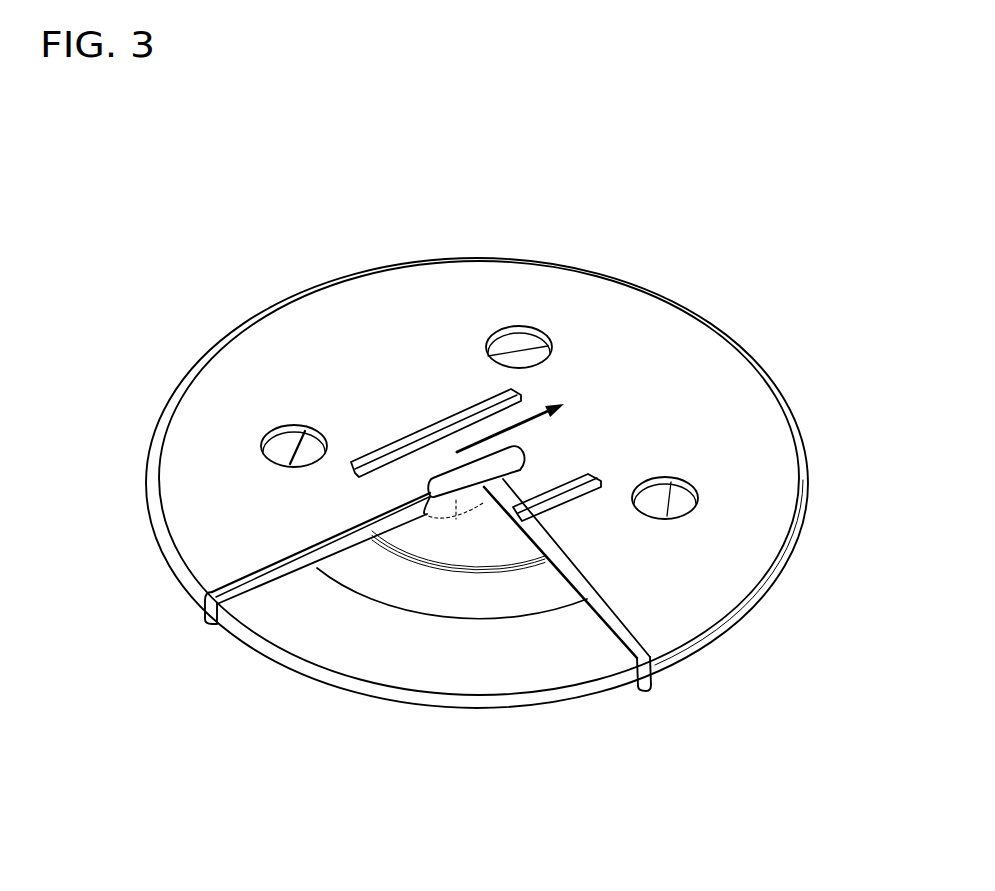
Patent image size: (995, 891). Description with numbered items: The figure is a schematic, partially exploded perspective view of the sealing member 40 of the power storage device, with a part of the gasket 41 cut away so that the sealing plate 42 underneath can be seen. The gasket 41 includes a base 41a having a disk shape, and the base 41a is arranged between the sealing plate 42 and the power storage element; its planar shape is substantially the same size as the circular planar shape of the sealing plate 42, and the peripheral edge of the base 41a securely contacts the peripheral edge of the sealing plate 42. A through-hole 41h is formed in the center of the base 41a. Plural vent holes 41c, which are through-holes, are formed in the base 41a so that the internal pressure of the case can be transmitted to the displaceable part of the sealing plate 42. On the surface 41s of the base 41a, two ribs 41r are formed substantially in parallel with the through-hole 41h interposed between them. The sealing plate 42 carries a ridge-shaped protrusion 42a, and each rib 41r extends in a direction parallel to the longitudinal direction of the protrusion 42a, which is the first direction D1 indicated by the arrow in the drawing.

The sealing member 40 is at (500, 481).
The gasket 41 is at (210, 627).
The base 41a is at (732, 384).
The surface 41s is at (687, 360).
The vent holes 41c is at (270, 441).
The ribs 41r is at (369, 458).
The through-hole 41h is at (475, 505).
The sealing plate 42 is at (428, 471).
The ridge-shaped protrusion 42a is at (450, 483).
The first direction D1 is at (500, 437).